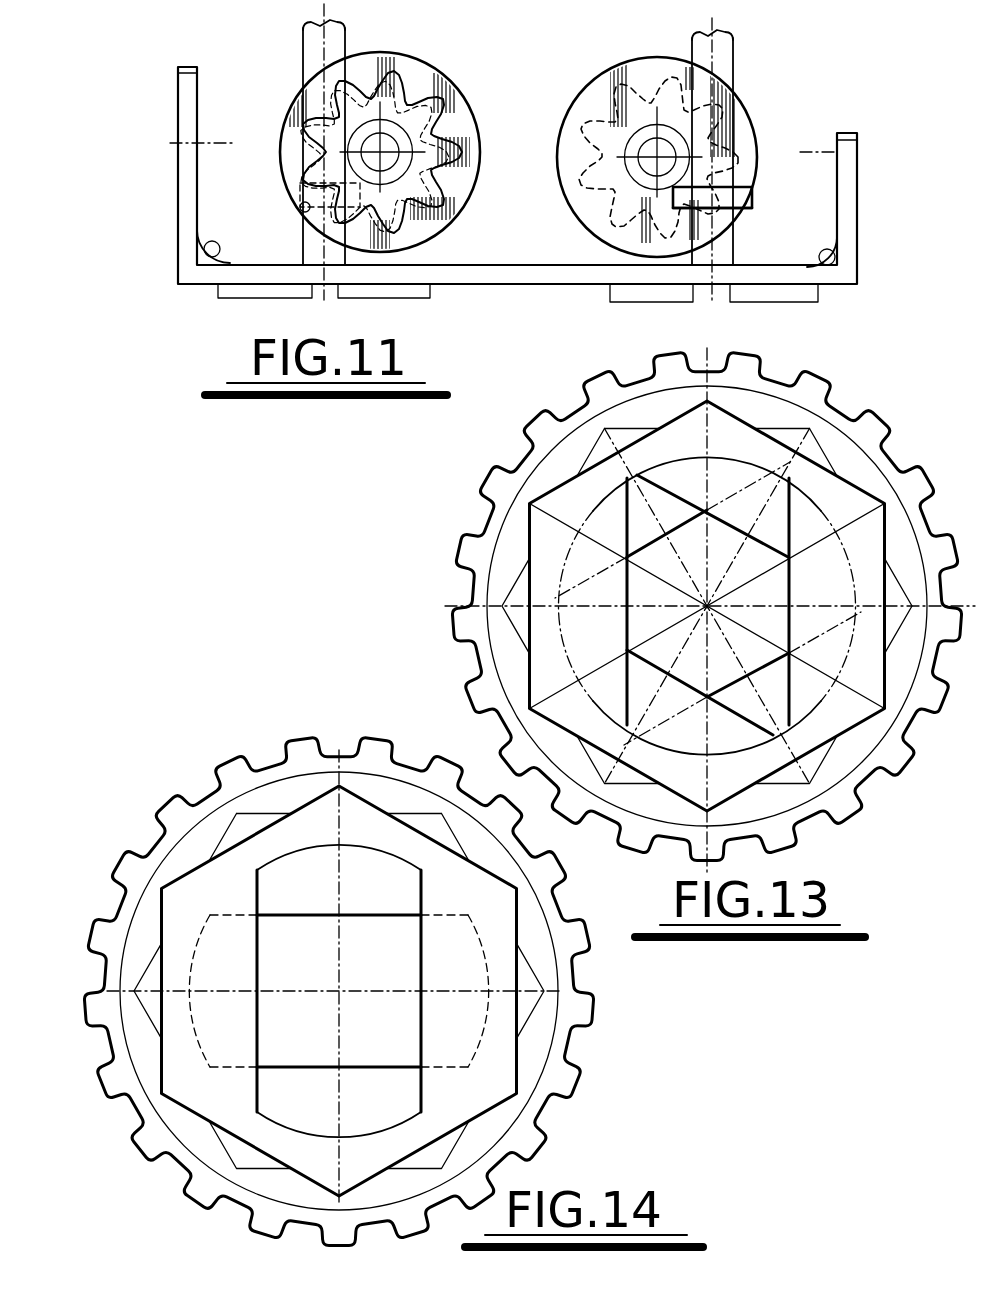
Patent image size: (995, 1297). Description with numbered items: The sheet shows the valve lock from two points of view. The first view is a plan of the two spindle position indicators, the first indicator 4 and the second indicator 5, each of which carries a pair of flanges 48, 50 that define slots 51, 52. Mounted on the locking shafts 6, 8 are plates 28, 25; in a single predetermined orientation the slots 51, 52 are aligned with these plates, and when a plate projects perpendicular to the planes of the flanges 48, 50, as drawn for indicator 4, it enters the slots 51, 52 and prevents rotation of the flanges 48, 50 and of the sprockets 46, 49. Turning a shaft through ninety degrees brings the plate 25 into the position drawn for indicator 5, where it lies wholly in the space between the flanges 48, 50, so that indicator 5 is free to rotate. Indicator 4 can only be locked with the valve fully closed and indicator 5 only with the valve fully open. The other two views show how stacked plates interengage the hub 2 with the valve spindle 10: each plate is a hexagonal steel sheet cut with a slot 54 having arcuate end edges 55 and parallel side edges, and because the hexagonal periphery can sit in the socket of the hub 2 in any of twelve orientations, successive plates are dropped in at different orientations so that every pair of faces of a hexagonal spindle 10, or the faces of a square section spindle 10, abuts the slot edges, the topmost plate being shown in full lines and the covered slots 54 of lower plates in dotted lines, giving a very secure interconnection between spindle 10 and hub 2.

In FIG. 14, the hub 2 is at (185, 859).
In FIG. 11, the first spindle position indicator 4 is at (292, 103).
In FIG. 11, the second spindle position indicator 5 is at (757, 152).
In FIG. 11, the locking shaft 6 is at (303, 31).
In FIG. 11, the locking shaft 8 is at (733, 55).
In FIG. 14, the valve spindle 10 is at (320, 950).
In FIG. 11, the plate 25 is at (753, 200).
In FIG. 11, the plate 28 is at (306, 214).
In FIG. 11, the sprocket 46 is at (371, 82).
In FIG. 11, the flange 48 is at (597, 93).
In FIG. 11, the sprocket 49 is at (317, 72).
In FIG. 11, the flange 50 is at (457, 222).
In FIG. 11, the slot 51 is at (300, 205).
In FIG. 11, the slot 52 is at (740, 213).
In FIG. 13, the slot 54 is at (584, 444).
In FIG. 14, the slot 54 is at (244, 863).
In FIG. 13, the arcuate end edge 55 is at (640, 528).